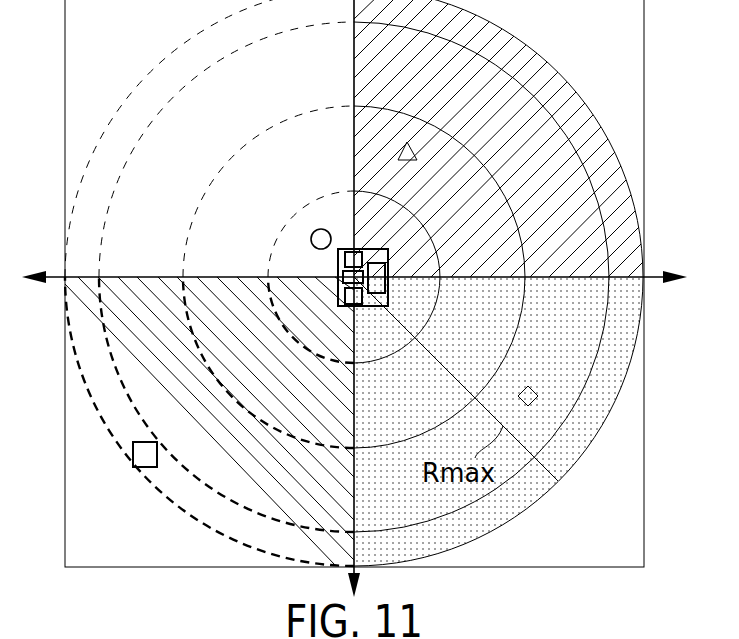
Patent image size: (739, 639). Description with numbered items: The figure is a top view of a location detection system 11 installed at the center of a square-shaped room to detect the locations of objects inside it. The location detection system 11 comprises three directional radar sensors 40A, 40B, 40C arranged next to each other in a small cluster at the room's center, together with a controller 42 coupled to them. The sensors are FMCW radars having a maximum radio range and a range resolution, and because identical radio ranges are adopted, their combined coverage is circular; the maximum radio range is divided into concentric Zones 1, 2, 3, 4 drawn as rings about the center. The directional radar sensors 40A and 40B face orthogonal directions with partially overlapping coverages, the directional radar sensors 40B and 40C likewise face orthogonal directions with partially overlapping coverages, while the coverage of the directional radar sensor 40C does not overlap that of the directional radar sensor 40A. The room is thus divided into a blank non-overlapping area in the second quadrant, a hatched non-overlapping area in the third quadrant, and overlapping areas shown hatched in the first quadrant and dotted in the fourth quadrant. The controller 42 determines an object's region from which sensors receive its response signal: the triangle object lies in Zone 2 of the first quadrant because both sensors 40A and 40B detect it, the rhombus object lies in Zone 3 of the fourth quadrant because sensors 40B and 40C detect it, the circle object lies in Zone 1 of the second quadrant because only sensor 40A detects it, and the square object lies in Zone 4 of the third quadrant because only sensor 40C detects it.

The Zone 1 is at (397, 277).
The Zone 2 is at (439, 277).
The Zone 3 is at (481, 277).
The Zone 4 is at (498, 283).
The location detection system 11 is at (344, 248).
The directional radar sensor 40A is at (350, 250).
The directional radar sensor 40B is at (388, 282).
The directional radar sensor 40C is at (363, 297).
The controller 42 is at (338, 276).